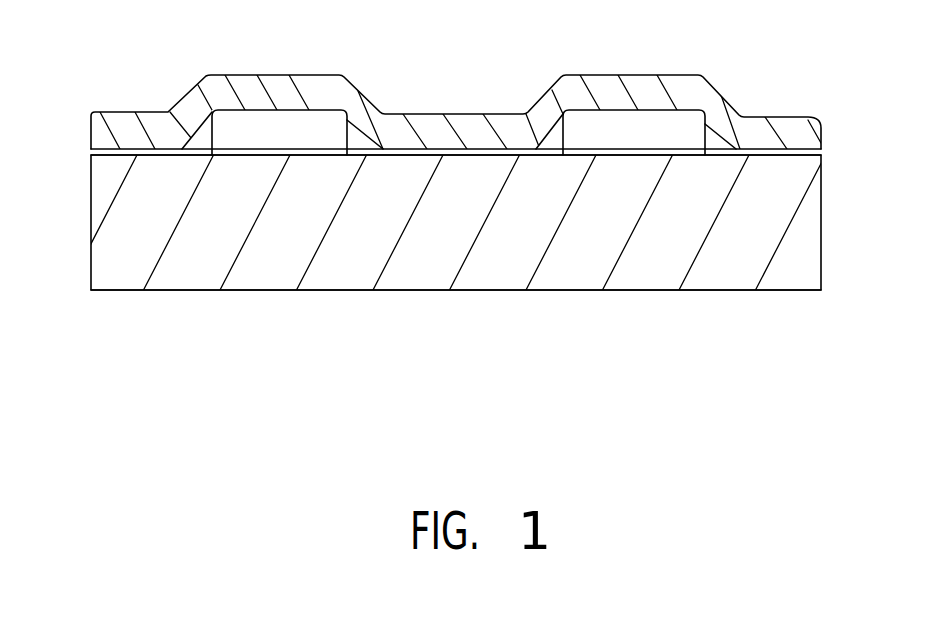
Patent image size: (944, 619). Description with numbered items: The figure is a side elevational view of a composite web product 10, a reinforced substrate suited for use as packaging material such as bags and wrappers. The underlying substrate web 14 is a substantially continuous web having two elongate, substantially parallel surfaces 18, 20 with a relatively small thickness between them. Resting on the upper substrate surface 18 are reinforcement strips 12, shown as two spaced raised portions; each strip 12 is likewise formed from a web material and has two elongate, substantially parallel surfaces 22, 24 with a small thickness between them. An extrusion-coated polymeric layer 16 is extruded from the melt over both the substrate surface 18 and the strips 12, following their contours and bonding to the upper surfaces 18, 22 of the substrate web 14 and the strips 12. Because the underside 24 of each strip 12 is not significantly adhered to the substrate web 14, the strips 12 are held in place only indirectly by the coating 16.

The composite web product 10 is at (434, 229).
The reinforcement strip 12 is at (251, 105).
The substrate web 14 is at (728, 275).
The extrusion-coated polymeric layer 16 is at (790, 125).
The substrate surface 18 is at (110, 157).
The substrate surface 20 is at (177, 291).
The strip surface 22 is at (310, 149).
The strip underside 24 is at (651, 110).